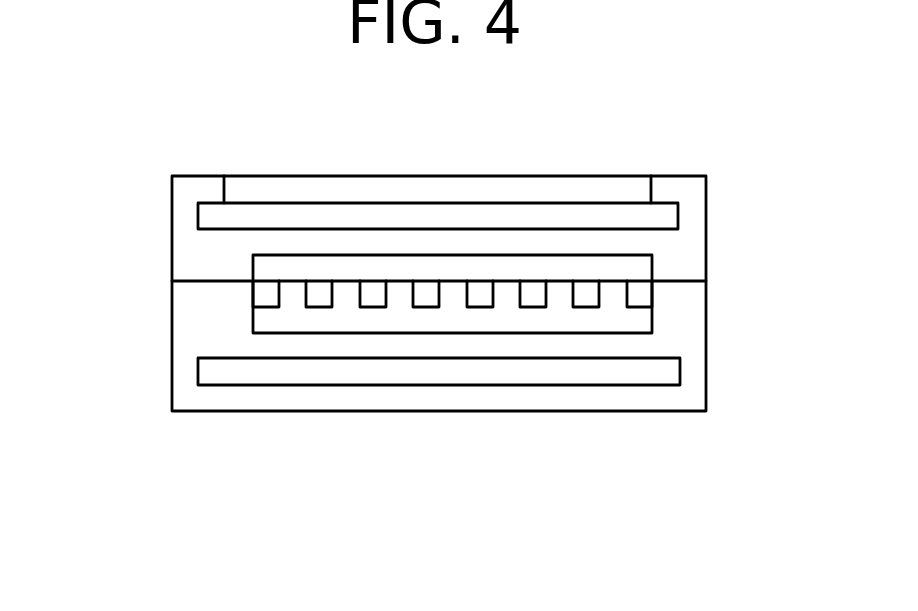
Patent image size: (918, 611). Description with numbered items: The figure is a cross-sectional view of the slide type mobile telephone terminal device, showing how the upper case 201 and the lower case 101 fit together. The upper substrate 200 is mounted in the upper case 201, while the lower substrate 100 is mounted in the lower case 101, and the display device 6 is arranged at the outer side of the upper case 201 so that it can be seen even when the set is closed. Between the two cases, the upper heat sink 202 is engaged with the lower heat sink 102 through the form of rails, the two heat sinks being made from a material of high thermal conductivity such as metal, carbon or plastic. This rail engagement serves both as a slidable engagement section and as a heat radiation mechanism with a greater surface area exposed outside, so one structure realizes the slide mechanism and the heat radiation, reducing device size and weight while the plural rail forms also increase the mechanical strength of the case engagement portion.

The display device 6 is at (569, 176).
The upper case 201 is at (172, 194).
The lower case 101 is at (172, 317).
The upper substrate 200 is at (663, 216).
The upper heat sink 202 is at (643, 270).
The lower heat sink 102 is at (643, 322).
The lower substrate 100 is at (204, 370).